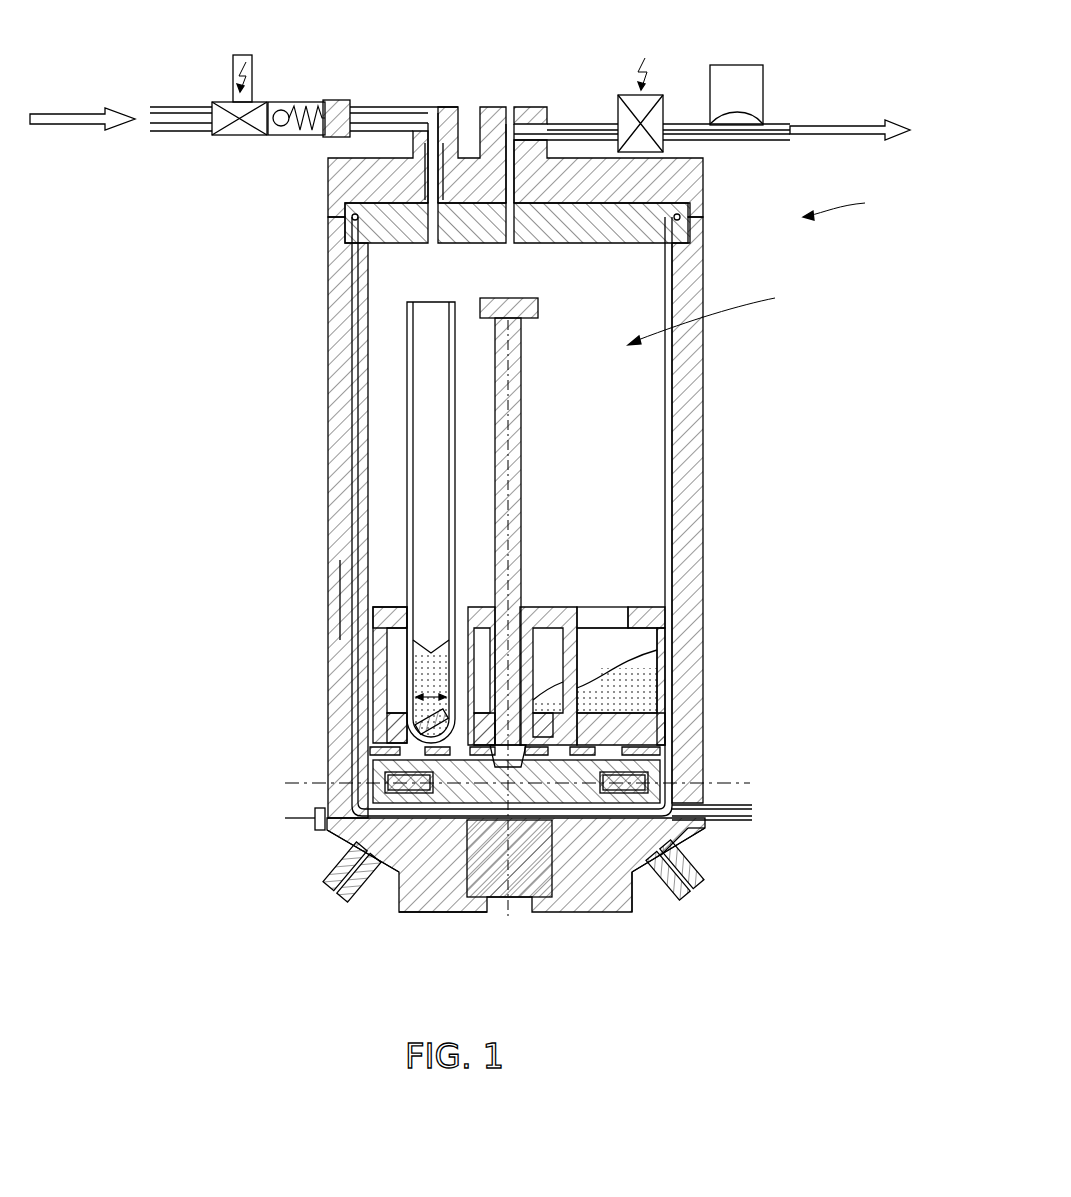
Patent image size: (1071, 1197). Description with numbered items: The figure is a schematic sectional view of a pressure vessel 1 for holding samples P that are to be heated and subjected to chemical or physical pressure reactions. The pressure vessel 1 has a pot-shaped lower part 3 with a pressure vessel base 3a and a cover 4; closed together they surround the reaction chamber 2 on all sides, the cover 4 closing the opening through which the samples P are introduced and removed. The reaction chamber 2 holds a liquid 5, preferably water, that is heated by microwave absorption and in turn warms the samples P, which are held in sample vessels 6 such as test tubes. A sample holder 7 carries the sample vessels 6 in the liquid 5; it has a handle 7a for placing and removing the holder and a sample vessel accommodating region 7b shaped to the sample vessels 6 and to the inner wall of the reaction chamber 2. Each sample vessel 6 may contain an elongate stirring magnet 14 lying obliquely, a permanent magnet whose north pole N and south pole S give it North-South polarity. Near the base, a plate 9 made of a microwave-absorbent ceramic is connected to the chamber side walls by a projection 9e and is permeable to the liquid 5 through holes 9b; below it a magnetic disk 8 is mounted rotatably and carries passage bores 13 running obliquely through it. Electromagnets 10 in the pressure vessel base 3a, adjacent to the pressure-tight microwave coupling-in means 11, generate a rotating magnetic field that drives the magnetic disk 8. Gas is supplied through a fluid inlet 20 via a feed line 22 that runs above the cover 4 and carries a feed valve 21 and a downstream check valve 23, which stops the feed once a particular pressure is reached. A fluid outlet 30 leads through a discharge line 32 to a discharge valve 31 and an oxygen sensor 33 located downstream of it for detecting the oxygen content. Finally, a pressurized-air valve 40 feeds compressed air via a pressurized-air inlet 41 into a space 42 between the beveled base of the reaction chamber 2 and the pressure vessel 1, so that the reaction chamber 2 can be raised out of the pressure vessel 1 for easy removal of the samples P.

The pressure vessel 1 is at (842, 200).
The reaction chamber 2 is at (690, 400).
The lower part 3 is at (713, 795).
The pressure vessel base 3a is at (447, 912).
The cover part 4 is at (705, 172).
The liquid 5 is at (662, 680).
The sample vessel 6 is at (425, 385).
The sample holder 7 is at (710, 312).
The handle 7a is at (495, 342).
The sample vessel accommodating region 7b is at (372, 640).
The magnetic disk 8 is at (355, 780).
The plate 9 is at (673, 720).
The holes 9b is at (637, 868).
The projection 9e is at (795, 735).
The electromagnet 10 is at (715, 955).
The microwave coupling-in means 11 is at (520, 880).
The passage bore 13 is at (605, 985).
The stirring magnet 14 is at (417, 698).
The fluid inlet 20 is at (437, 185).
The feed valve 21 is at (250, 136).
The feed line 22 is at (405, 107).
The check valve 23 is at (302, 101).
The fluid outlet 30 is at (505, 200).
The discharge valve 31 is at (655, 108).
The discharge line 32 is at (575, 124).
The oxygen sensor 33 is at (740, 65).
The pressurized-air valve 40 is at (760, 812).
The pressurized-air inlet 41 is at (705, 828).
The space 42 is at (675, 850).
The sample P is at (345, 600).
The south pole S is at (423, 690).
The north pole N is at (423, 715).